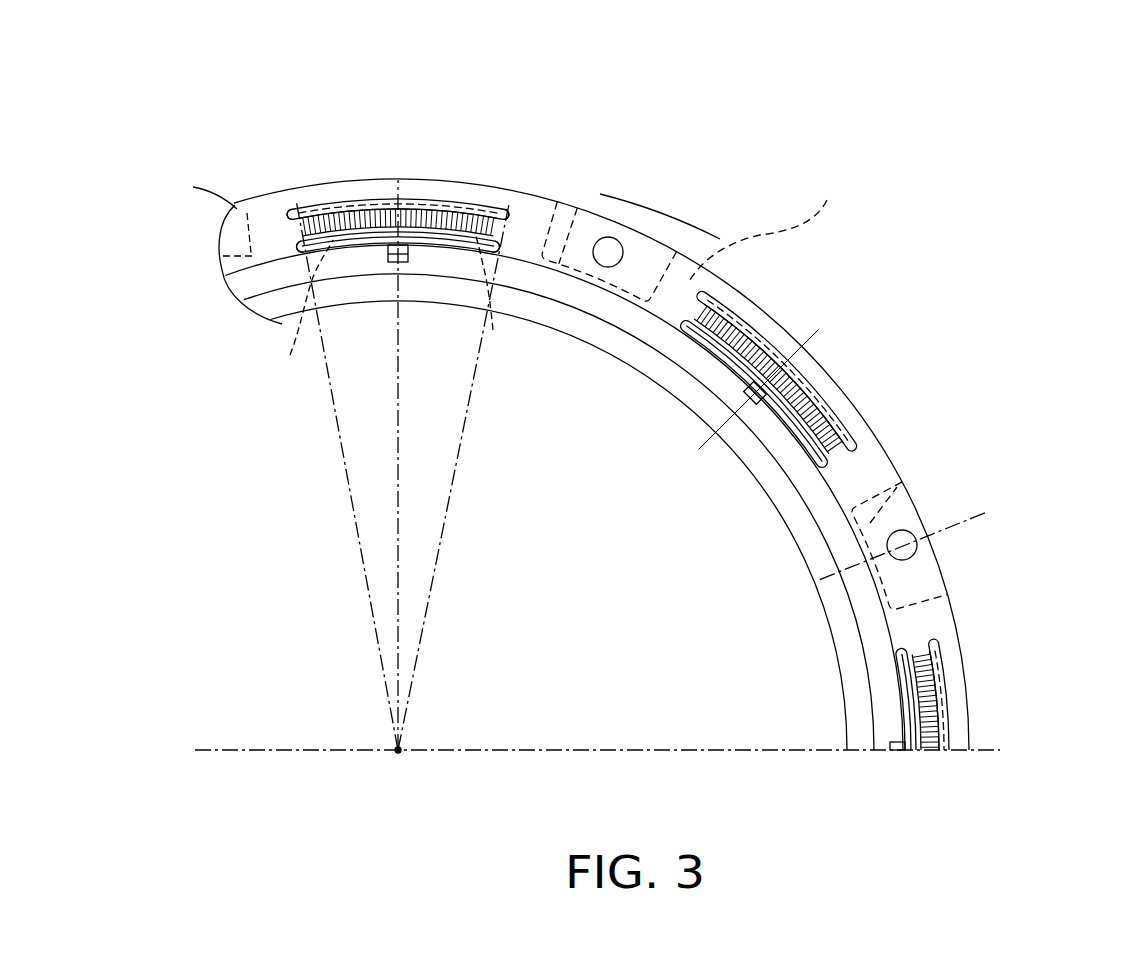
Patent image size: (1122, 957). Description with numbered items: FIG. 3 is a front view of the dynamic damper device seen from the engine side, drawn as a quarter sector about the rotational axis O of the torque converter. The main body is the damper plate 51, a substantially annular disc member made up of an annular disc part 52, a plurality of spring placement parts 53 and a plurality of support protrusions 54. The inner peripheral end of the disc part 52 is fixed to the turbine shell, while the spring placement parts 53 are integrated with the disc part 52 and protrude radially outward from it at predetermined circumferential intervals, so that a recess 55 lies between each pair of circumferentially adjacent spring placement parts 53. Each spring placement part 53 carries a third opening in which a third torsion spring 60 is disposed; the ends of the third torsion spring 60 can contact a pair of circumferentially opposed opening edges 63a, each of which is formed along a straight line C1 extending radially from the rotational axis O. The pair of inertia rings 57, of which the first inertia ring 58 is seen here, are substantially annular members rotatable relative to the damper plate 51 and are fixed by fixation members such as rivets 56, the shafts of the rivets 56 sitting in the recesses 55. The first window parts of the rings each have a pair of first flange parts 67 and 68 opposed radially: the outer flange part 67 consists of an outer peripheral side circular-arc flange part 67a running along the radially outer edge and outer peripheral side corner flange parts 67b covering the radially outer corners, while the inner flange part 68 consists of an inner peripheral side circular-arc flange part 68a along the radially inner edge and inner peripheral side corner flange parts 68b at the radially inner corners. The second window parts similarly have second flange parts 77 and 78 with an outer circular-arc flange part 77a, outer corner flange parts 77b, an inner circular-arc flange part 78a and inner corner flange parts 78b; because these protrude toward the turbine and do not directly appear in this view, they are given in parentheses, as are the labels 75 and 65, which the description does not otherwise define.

The damper plate 51 is at (594, 464).
The disc part 52 is at (645, 330).
The spring placement parts 53 is at (540, 212).
The support protrusions 54 is at (386, 253).
The recesses 55 is at (582, 212).
The rivets 56 is at (614, 237).
The pair of inertia rings 57 is at (655, 242).
The first inertia ring 58 is at (695, 188).
The third torsion spring 60 is at (810, 365).
The opening edges 63a is at (394, 313).
The flange 65 is at (225, 166).
The flange 75 is at (262, 212).
The first flange part 67 is at (428, 136).
The second flange part 77 is at (428, 136).
The outer peripheral side circular-arc flange part 67a is at (426, 154).
The outer peripheral side circular-arc flange part 77a is at (433, 209).
The outer peripheral side corner flange parts 67b is at (428, 165).
The outer peripheral side corner flange parts 77b is at (297, 213).
The first flange part 68 is at (365, 351).
The second flange part 78 is at (365, 351).
The inner peripheral side circular-arc flange part 68a is at (454, 354).
The inner peripheral side circular-arc flange part 78a is at (460, 240).
The inner peripheral side corner flange parts 68b is at (365, 329).
The inner peripheral side corner flange parts 78b is at (301, 247).
The straight line C1 is at (362, 592).
The rotational axis O is at (597, 769).